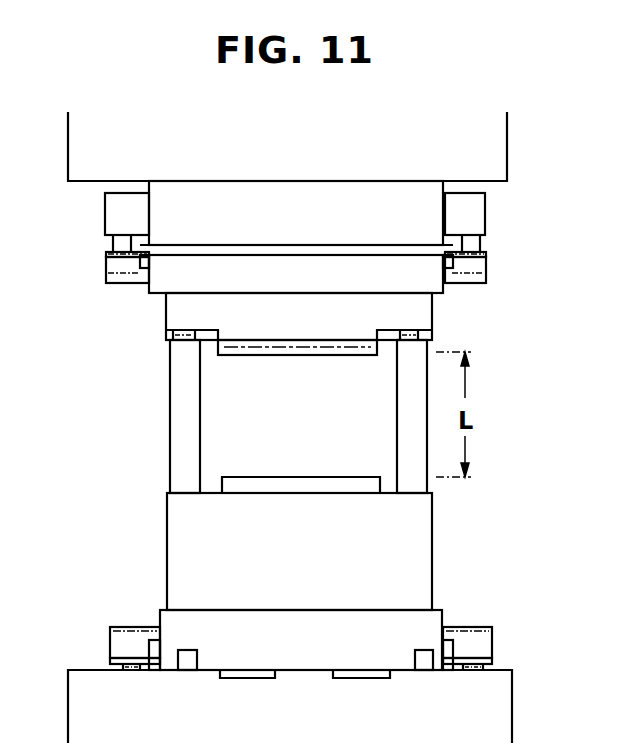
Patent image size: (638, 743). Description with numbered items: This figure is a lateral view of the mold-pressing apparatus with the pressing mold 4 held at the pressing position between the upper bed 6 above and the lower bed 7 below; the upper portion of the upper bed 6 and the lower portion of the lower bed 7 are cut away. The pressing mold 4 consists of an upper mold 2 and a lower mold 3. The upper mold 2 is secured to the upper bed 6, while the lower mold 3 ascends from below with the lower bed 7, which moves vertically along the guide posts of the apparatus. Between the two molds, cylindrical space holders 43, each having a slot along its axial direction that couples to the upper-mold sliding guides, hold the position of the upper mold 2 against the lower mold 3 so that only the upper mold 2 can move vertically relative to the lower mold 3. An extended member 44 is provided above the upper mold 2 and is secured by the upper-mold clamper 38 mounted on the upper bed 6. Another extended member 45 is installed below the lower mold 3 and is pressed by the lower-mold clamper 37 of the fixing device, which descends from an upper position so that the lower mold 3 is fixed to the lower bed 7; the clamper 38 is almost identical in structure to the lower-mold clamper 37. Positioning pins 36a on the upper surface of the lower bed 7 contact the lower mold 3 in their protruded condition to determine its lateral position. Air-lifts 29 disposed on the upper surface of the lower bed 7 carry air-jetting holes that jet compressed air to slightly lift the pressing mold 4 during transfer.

The upper bed 6 is at (68, 161).
The lower bed 7 is at (82, 670).
The pressing mold 4 is at (102, 313).
The upper mold 2 is at (157, 295).
The lower mold 3 is at (167, 494).
The cylindrical space holder 43 is at (200, 387).
The extended member 44 is at (149, 250).
The extended member 45 is at (158, 645).
The upper-mold clamper 38 is at (110, 283).
The lower-mold clamper 37 is at (130, 627).
The positioning pin 36a is at (197, 652).
The air-lift 29 is at (222, 662).